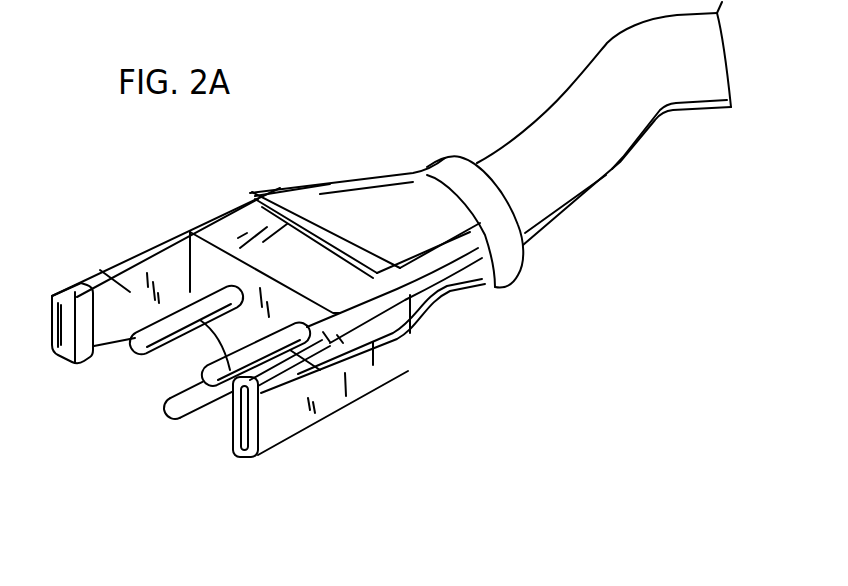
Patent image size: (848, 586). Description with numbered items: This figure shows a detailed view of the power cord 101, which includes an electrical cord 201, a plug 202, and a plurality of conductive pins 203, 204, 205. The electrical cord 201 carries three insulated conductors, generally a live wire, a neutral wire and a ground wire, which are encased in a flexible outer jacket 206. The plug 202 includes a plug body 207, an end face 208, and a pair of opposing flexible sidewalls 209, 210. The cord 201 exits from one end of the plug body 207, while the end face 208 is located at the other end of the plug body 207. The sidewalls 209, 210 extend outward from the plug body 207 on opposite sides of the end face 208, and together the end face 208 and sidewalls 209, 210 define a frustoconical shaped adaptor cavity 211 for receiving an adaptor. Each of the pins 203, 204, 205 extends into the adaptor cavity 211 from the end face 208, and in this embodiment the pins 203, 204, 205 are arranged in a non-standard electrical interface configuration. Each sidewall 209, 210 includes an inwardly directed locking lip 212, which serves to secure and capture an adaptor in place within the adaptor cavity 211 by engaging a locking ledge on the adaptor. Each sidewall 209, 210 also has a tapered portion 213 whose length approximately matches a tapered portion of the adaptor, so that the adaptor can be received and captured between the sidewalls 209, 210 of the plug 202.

The power cord 101 is at (433, 42).
The electrical cord 201 is at (637, 153).
The plug 202 is at (263, 187).
The conductive pin 203 is at (146, 367).
The conductive pin 204 is at (197, 372).
The conductive pin 205 is at (168, 422).
The flexible outer jacket 206 is at (583, 99).
The plug body 207 is at (330, 277).
The end face 208 is at (200, 267).
The flexible sidewall 209 is at (135, 252).
The flexible sidewall 210 is at (281, 418).
The adaptor cavity 211 is at (213, 424).
The locking lip 212 is at (90, 318).
The tapered portion 213 is at (123, 287).